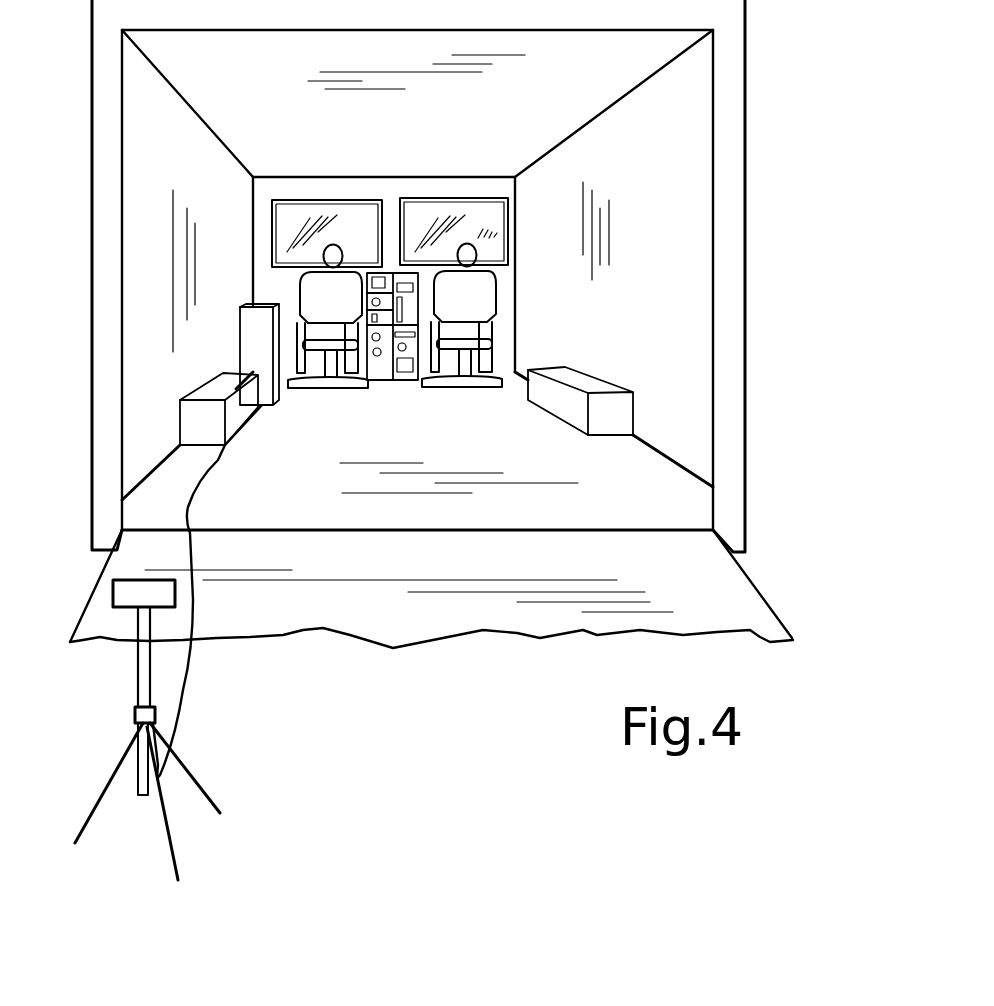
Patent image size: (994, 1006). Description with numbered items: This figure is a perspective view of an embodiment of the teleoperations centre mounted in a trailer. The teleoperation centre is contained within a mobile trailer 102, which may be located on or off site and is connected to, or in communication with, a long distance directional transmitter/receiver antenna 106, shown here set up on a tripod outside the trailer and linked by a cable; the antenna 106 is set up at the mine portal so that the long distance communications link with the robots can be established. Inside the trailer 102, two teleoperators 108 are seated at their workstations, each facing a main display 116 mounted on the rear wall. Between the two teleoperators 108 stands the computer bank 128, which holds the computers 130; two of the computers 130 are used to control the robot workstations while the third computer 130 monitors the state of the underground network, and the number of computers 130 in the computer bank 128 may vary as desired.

The mobile trailer 102 is at (723, 245).
The long distance directional transmitter/receiver antenna 106 is at (152, 597).
The teleoperator 108 is at (327, 288).
The main display 116 is at (477, 230).
The computer bank 128 is at (603, 326).
The computer 130 is at (412, 308).